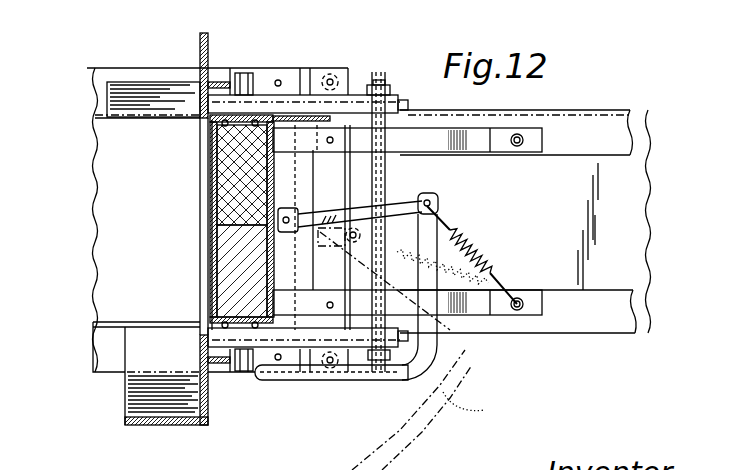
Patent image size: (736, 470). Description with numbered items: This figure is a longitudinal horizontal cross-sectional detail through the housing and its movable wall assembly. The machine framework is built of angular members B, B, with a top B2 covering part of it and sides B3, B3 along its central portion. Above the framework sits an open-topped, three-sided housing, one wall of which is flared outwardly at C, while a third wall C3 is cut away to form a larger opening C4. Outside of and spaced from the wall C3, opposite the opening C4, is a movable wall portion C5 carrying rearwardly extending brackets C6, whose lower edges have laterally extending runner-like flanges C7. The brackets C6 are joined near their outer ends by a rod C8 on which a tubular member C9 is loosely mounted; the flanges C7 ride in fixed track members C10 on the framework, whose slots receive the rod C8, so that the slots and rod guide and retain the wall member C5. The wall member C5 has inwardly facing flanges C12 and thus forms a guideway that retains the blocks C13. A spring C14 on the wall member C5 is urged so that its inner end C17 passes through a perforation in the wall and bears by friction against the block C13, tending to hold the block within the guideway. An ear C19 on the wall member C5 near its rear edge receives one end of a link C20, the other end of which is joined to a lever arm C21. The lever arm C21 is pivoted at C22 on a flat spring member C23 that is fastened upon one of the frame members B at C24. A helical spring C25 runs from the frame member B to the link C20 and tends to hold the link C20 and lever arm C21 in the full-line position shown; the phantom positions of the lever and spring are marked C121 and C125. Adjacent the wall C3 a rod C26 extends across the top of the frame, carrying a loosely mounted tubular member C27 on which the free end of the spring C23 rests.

The angular member B is at (98, 85).
The top B2 is at (630, 195).
The side B3 is at (97, 127).
The flared wall C is at (173, 413).
The third wall C3 is at (203, 47).
The opening C4 is at (200, 117).
The movable wall portion C5 is at (275, 179).
The bracket C6 is at (305, 113).
The runner-like flange C7 is at (405, 100).
The rod C8 is at (382, 80).
The tubular member C9 is at (382, 180).
The fixed track member C10 is at (285, 100).
The inwardly facing flange C12 is at (213, 133).
The block C13 is at (230, 205).
The spring C14 is at (290, 210).
The inner end of spring C17 is at (268, 226).
The ear C19 is at (273, 236).
The link C20 is at (425, 200).
The lever arm C21 is at (432, 232).
The pivot C22 is at (443, 337).
The flat spring member C23 is at (420, 140).
The fastening C24 is at (518, 135).
The helical spring C25 is at (477, 250).
The rod C26 is at (245, 370).
The tubular member C27 is at (220, 257).
The phantom arm position C121 is at (434, 410).
The phantom spring position C125 is at (480, 283).